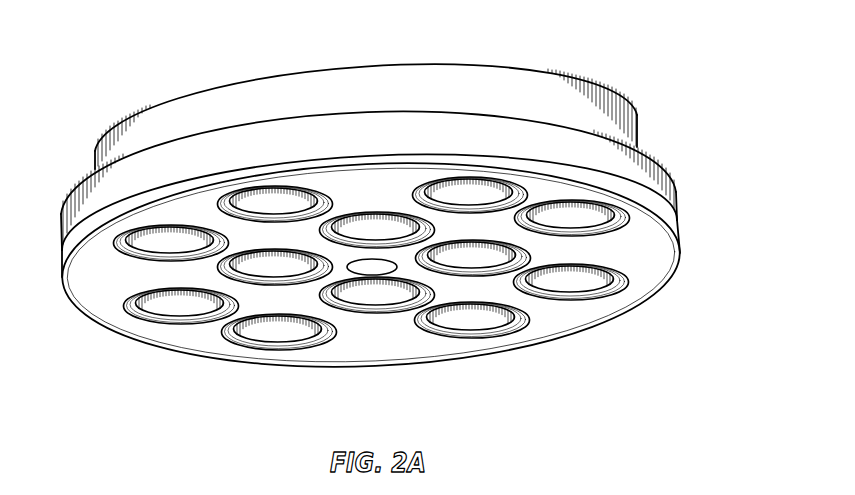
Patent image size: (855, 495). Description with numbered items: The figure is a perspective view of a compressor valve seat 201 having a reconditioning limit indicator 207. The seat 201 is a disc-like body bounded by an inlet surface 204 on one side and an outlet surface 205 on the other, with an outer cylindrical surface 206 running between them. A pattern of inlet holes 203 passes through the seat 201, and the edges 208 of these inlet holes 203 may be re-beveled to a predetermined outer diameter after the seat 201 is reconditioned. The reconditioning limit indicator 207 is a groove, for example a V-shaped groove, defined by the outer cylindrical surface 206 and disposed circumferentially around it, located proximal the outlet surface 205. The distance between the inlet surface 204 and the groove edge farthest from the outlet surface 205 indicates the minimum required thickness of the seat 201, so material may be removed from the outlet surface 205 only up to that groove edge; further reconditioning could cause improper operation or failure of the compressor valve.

The seat 201 is at (684, 67).
The inlet holes 203 is at (587, 280).
The inlet surface 204 is at (187, 92).
The outlet surface 205 is at (400, 350).
The outer cylindrical surface 206 is at (660, 177).
The reconditioning limit indicator 207 is at (677, 223).
The edges of the inlet holes 208 is at (122, 255).